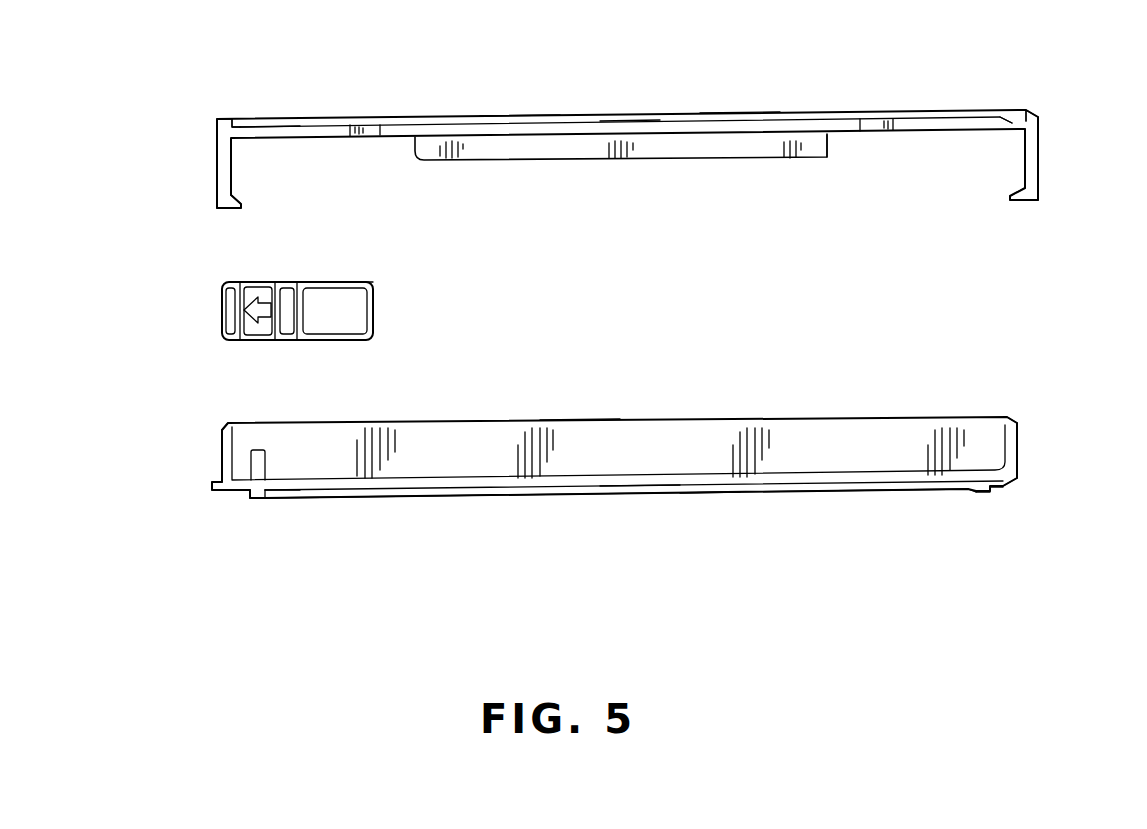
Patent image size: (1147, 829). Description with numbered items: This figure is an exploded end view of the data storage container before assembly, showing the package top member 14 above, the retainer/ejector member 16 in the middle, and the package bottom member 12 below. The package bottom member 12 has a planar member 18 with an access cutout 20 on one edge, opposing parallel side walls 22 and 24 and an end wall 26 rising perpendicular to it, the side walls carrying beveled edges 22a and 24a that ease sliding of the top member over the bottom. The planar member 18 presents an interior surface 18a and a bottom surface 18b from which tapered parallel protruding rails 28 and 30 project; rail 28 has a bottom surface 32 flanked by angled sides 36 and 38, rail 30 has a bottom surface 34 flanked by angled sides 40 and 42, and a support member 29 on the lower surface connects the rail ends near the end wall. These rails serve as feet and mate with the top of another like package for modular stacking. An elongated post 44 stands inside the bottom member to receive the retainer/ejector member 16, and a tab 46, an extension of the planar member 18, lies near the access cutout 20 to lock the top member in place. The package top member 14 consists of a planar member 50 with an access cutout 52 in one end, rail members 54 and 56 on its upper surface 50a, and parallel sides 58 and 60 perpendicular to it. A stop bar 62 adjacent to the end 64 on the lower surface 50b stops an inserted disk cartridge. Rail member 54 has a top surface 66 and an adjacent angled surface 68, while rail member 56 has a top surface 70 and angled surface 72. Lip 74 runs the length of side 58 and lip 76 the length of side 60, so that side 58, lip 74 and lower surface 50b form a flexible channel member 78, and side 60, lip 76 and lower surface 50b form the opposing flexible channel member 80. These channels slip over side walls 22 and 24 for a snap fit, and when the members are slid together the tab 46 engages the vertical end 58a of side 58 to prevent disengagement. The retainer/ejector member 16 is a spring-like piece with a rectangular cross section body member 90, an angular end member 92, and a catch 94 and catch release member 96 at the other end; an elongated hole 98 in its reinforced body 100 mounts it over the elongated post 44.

The package bottom member 12 is at (165, 458).
The package top member 14 is at (140, 161).
The disk retainer/ejector member 16 is at (135, 318).
The planar member 18 is at (640, 490).
The inner surface of bottom wall 18a is at (684, 473).
The bottom surface 18b is at (712, 497).
The access cutout 20 is at (568, 488).
The side wall 22 is at (222, 450).
The beveled edge 22a is at (228, 428).
The side wall 24 is at (1020, 445).
The beveled edge 24a is at (1012, 420).
The end wall 26 is at (582, 432).
The tapered parallel protruding rail 28 is at (255, 500).
The support member 29 is at (463, 498).
The tapered parallel protruding rail 30 is at (978, 492).
The bottom surface 32 is at (262, 498).
The bottom surface 34 is at (990, 492).
The angled side 36 is at (243, 495).
The angled side 38 is at (270, 496).
The angled side 40 is at (967, 488).
The angled side 42 is at (1000, 490).
The elongated post 44 is at (268, 458).
The tab 46 is at (212, 488).
The planar member 50 is at (742, 118).
The upper surface 50a is at (860, 118).
The lower surface 50b is at (843, 135).
The access cutout 52 is at (632, 128).
The rail member 54 is at (225, 118).
The rail member 56 is at (1040, 118).
The side 58 is at (217, 190).
The vertical end 58a is at (217, 173).
The side 60 is at (1040, 162).
The stop bar 62 is at (712, 160).
The end 64 is at (518, 116).
The top surface 66 is at (236, 120).
The angled surface 68 is at (252, 124).
The top surface 70 is at (1030, 112).
The angled surface 72 is at (1010, 117).
The lip 74 is at (227, 212).
The lip 76 is at (1018, 205).
The flexible channel member 78 is at (235, 170).
The flexible channel member 80 is at (1020, 166).
The body member 90 is at (330, 282).
The angular end member 92 is at (373, 308).
The catch 94 is at (300, 313).
The catch release member 96 is at (226, 305).
The elongated hole 98 is at (262, 300).
The reinforced body 100 is at (248, 282).